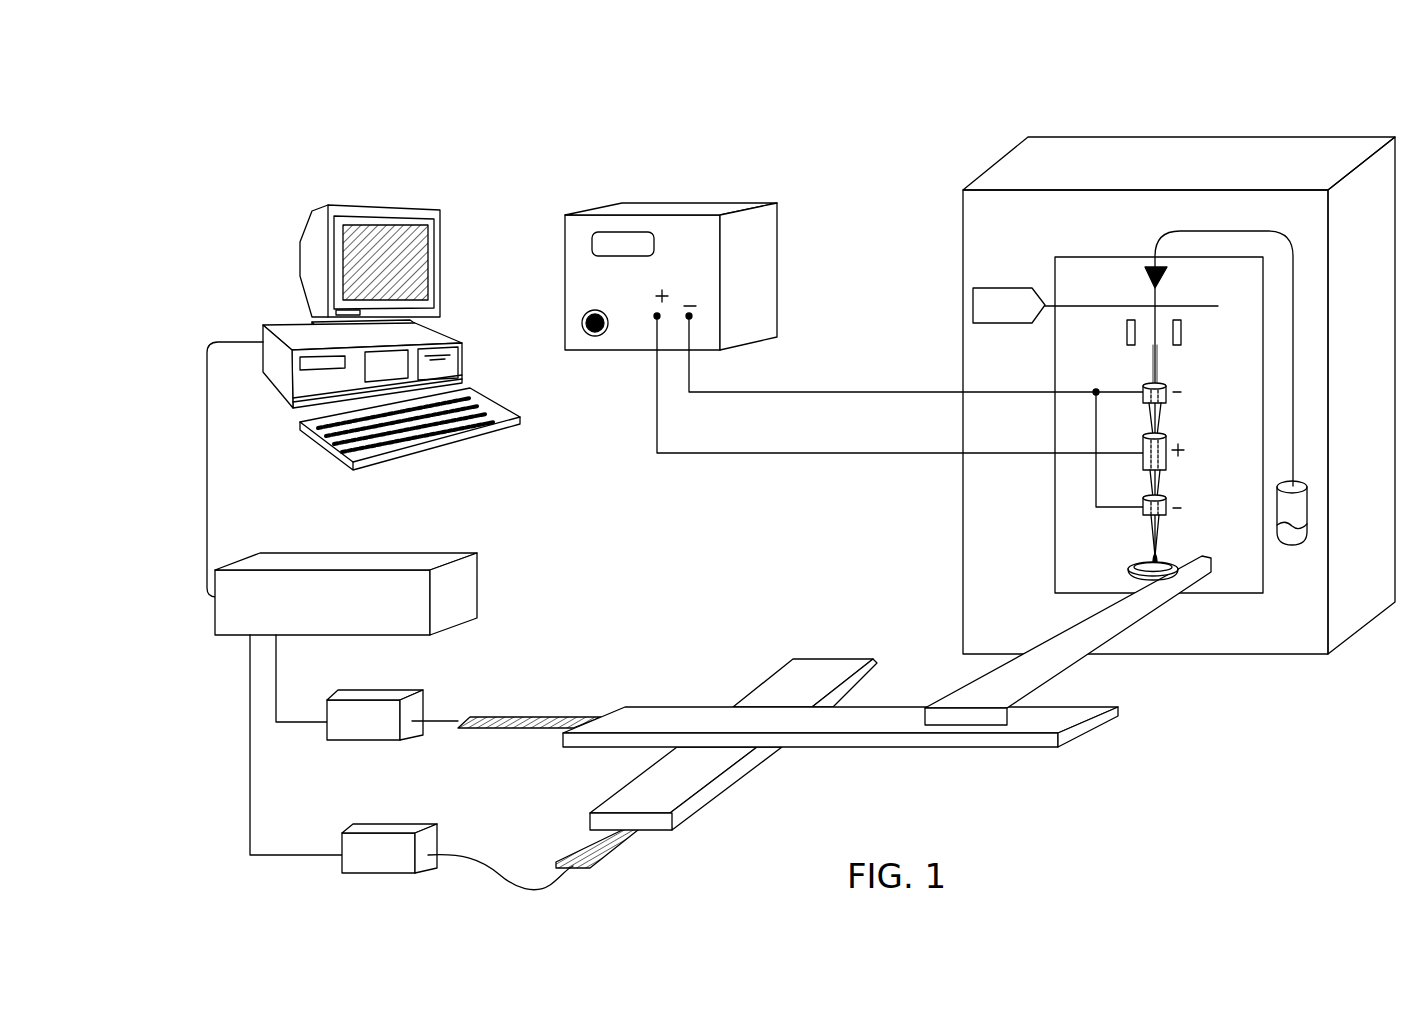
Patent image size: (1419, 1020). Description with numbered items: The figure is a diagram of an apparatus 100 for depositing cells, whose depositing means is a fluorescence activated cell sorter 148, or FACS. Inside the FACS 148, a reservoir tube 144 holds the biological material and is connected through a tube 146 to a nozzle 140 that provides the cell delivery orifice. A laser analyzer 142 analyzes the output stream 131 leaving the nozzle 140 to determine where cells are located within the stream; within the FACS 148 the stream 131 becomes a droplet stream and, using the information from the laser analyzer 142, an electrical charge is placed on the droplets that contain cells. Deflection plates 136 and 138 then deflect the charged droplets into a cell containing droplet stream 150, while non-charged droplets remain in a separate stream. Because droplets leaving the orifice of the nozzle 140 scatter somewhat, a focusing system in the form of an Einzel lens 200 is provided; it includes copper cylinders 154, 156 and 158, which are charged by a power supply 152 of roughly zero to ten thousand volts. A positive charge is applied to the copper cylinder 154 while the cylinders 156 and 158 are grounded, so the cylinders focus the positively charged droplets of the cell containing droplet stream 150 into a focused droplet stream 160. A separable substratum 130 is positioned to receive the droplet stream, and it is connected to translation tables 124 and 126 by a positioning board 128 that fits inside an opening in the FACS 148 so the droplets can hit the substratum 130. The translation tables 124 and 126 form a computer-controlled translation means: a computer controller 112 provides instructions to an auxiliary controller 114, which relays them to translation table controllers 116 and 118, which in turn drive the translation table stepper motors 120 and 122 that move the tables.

The apparatus 100 is at (718, 122).
The computer controller 112 is at (425, 207).
The auxiliary controller 114 is at (425, 556).
The translation table controller 116 is at (393, 691).
The translation table controller 118 is at (408, 828).
The translation table stepper motor 120 is at (515, 722).
The translation table stepper motor 122 is at (610, 822).
The translation table 124 is at (1068, 738).
The translation table 126 is at (835, 670).
The positioning board 128 is at (1065, 638).
The separable substratum 130 is at (1138, 571).
The output stream 131 is at (1158, 298).
The deflection plate 136 is at (1125, 338).
The deflection plate 138 is at (1183, 341).
The nozzle 140 is at (1162, 282).
The laser analyzer 142 is at (1009, 286).
The reservoir tube 144 is at (1300, 505).
The tube 146 is at (1232, 231).
The fluorescence activated cell sorter 148 is at (1178, 163).
The cell containing droplet stream 150 is at (1158, 355).
The power supply 152 is at (720, 205).
The copper cylinder 154 is at (1167, 471).
The copper cylinder 156 is at (1166, 500).
The copper cylinder 158 is at (1166, 400).
The focused droplet stream 160 is at (1157, 528).
The Einzel lens 200 is at (1118, 432).